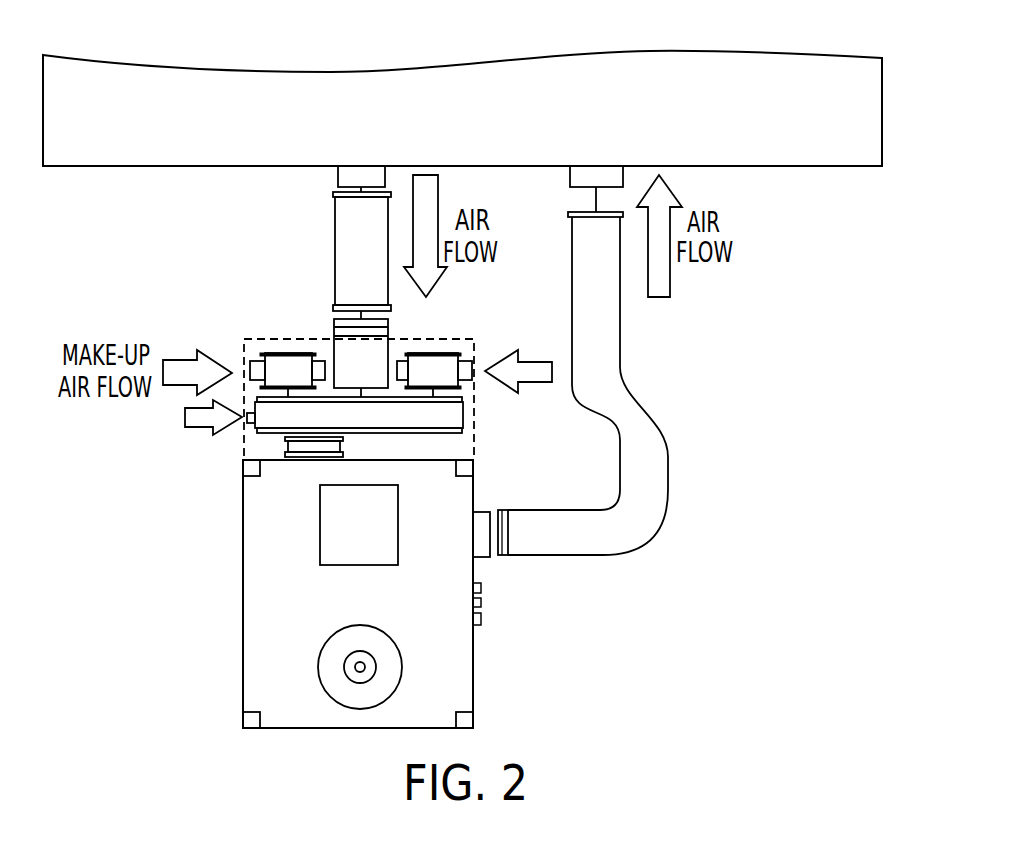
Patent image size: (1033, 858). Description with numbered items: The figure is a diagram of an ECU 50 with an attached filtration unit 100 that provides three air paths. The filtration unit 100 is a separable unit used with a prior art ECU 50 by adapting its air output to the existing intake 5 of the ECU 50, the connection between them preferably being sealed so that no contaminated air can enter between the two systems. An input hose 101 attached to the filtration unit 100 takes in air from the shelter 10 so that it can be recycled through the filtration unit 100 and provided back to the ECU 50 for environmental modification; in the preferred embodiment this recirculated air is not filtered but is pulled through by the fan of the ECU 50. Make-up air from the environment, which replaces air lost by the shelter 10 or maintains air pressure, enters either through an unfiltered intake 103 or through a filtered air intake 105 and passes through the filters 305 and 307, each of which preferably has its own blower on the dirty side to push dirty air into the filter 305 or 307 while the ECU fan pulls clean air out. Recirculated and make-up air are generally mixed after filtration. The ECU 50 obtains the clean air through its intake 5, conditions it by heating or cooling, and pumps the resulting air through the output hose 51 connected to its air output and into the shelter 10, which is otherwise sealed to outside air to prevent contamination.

The shelter 10 is at (777, 166).
The input hose 101 is at (335, 215).
The filtration unit 100 is at (474, 436).
The filter 307 is at (282, 355).
The filter 305 is at (440, 355).
The filtered air intake 105 is at (245, 370).
The unfiltered intake 103 is at (247, 418).
The intake 5 is at (285, 440).
The ECU 50 is at (473, 655).
The output hose 51 is at (668, 487).